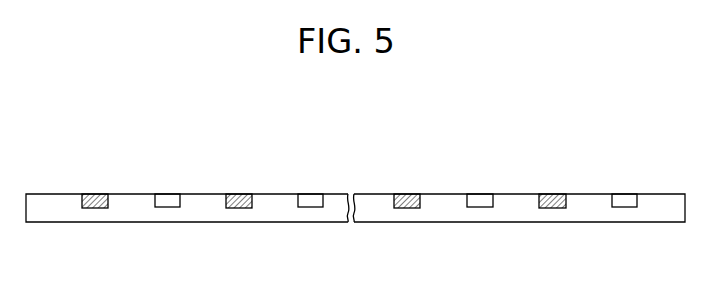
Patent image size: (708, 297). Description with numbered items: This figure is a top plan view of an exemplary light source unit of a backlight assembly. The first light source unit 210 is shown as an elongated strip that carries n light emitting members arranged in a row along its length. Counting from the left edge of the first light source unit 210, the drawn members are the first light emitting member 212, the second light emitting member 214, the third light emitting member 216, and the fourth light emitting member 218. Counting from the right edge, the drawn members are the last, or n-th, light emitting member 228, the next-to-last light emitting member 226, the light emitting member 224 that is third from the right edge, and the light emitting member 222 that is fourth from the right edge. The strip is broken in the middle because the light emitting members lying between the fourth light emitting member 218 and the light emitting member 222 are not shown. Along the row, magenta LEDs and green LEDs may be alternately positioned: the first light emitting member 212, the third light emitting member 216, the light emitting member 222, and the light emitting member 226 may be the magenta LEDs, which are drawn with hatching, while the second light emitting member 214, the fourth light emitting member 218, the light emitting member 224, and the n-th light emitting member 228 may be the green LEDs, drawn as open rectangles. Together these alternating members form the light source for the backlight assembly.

The first light source unit 210 is at (43, 202).
The first light emitting member 212 is at (95, 208).
The second light emitting member 214 is at (168, 200).
The third light emitting member 216 is at (238, 209).
The fourth light emitting member 218 is at (308, 198).
The n-3-th light emitting member 222 is at (407, 198).
The n-2-th light emitting member 224 is at (480, 208).
The n-1-th light emitting member 226 is at (548, 198).
The n-th light emitting member 228 is at (623, 208).